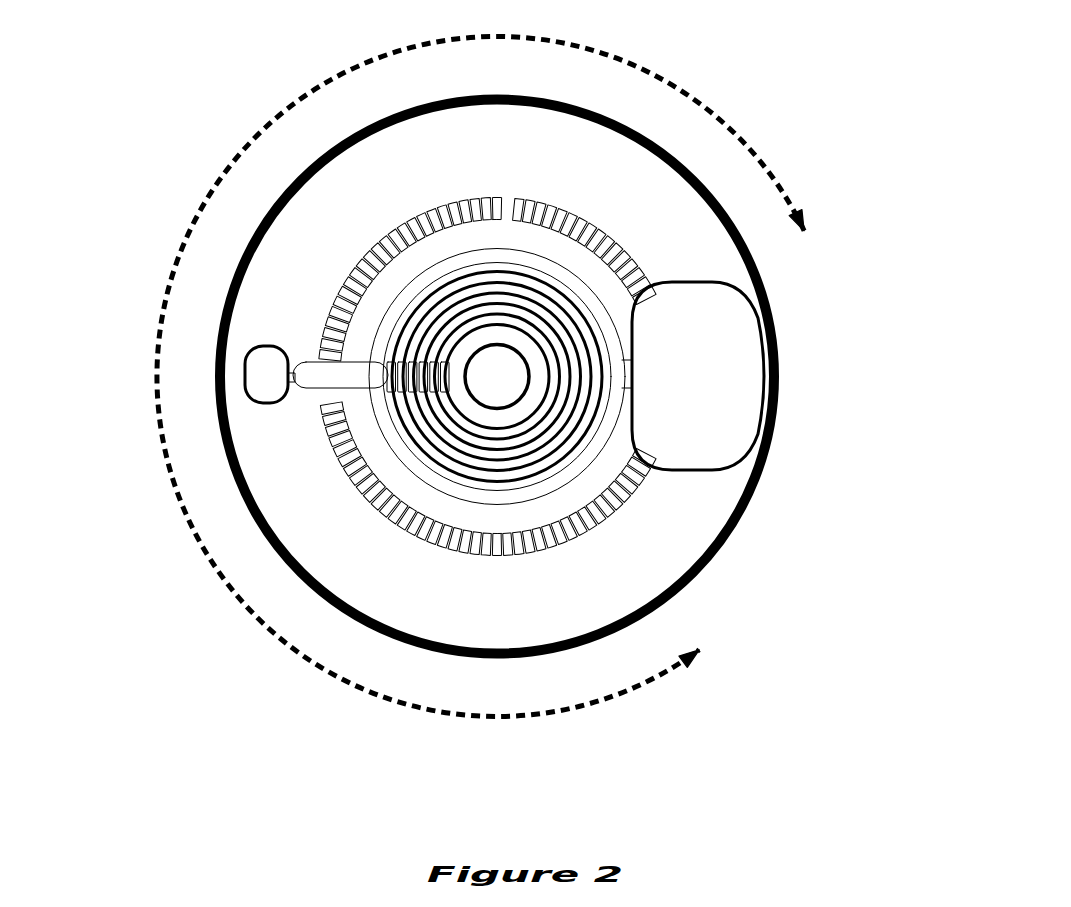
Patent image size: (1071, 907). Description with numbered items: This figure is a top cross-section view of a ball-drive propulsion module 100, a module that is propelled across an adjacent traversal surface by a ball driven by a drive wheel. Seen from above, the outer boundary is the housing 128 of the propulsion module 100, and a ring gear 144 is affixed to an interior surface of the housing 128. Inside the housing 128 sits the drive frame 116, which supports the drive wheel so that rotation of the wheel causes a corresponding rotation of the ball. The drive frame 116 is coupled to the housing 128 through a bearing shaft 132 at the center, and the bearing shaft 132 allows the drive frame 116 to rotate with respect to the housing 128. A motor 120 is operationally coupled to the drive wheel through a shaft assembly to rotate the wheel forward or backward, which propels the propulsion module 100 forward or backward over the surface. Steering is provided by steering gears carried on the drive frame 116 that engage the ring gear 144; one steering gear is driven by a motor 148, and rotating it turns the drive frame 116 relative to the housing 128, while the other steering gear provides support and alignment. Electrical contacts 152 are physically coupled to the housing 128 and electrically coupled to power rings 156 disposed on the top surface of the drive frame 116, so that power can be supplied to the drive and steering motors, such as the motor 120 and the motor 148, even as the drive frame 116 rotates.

The ball-drive propulsion module 100 is at (231, 49).
The drive frame 116 is at (608, 471).
The motor 120 is at (717, 432).
The housing 128 is at (786, 324).
The bearing shaft 132 is at (543, 383).
The ring gear 144 is at (649, 254).
The motor 148 is at (232, 400).
The electrical contacts 152 is at (375, 366).
The power rings 156 is at (443, 305).